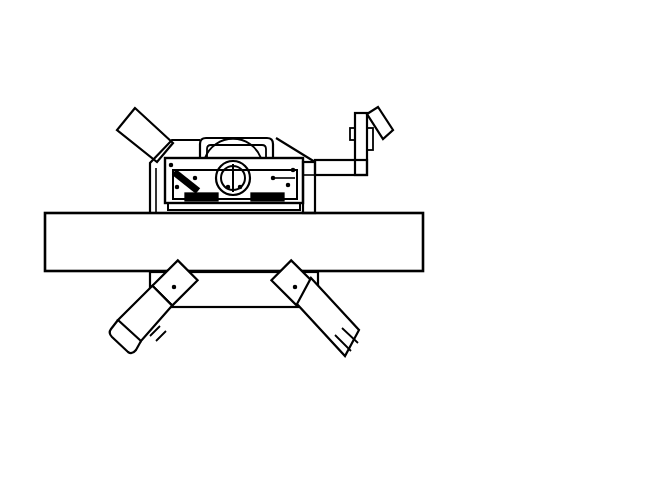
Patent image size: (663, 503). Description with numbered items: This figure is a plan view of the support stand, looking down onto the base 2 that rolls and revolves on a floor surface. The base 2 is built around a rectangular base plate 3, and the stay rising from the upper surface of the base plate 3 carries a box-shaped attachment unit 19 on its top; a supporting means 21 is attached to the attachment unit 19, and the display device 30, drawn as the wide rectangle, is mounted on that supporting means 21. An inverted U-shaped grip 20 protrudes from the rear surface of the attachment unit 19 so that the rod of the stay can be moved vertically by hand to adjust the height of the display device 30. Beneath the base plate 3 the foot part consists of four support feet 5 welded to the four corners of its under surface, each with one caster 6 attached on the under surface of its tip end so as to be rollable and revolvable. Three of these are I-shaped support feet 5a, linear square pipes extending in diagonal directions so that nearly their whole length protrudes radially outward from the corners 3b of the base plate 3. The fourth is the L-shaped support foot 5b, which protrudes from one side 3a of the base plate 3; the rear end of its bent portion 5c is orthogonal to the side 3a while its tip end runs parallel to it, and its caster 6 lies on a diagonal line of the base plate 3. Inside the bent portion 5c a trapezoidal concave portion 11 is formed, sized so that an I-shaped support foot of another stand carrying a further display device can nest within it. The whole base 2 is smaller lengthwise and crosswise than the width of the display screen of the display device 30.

The base 2 is at (224, 96).
The base plate 3 is at (151, 197).
The side of the base plate 3a is at (315, 198).
The corners of the base plate 3b is at (317, 294).
The support feet 5 is at (300, 226).
The I-shaped support feet 5a is at (135, 108).
The L-shaped support foot 5b is at (370, 158).
The bent portion 5c is at (356, 171).
The casters 6 is at (373, 356).
The concave portion 11 is at (323, 161).
The attachment unit 19 is at (192, 161).
The grip 20 is at (244, 136).
The supporting means 21 is at (283, 151).
The display device 30 is at (413, 242).